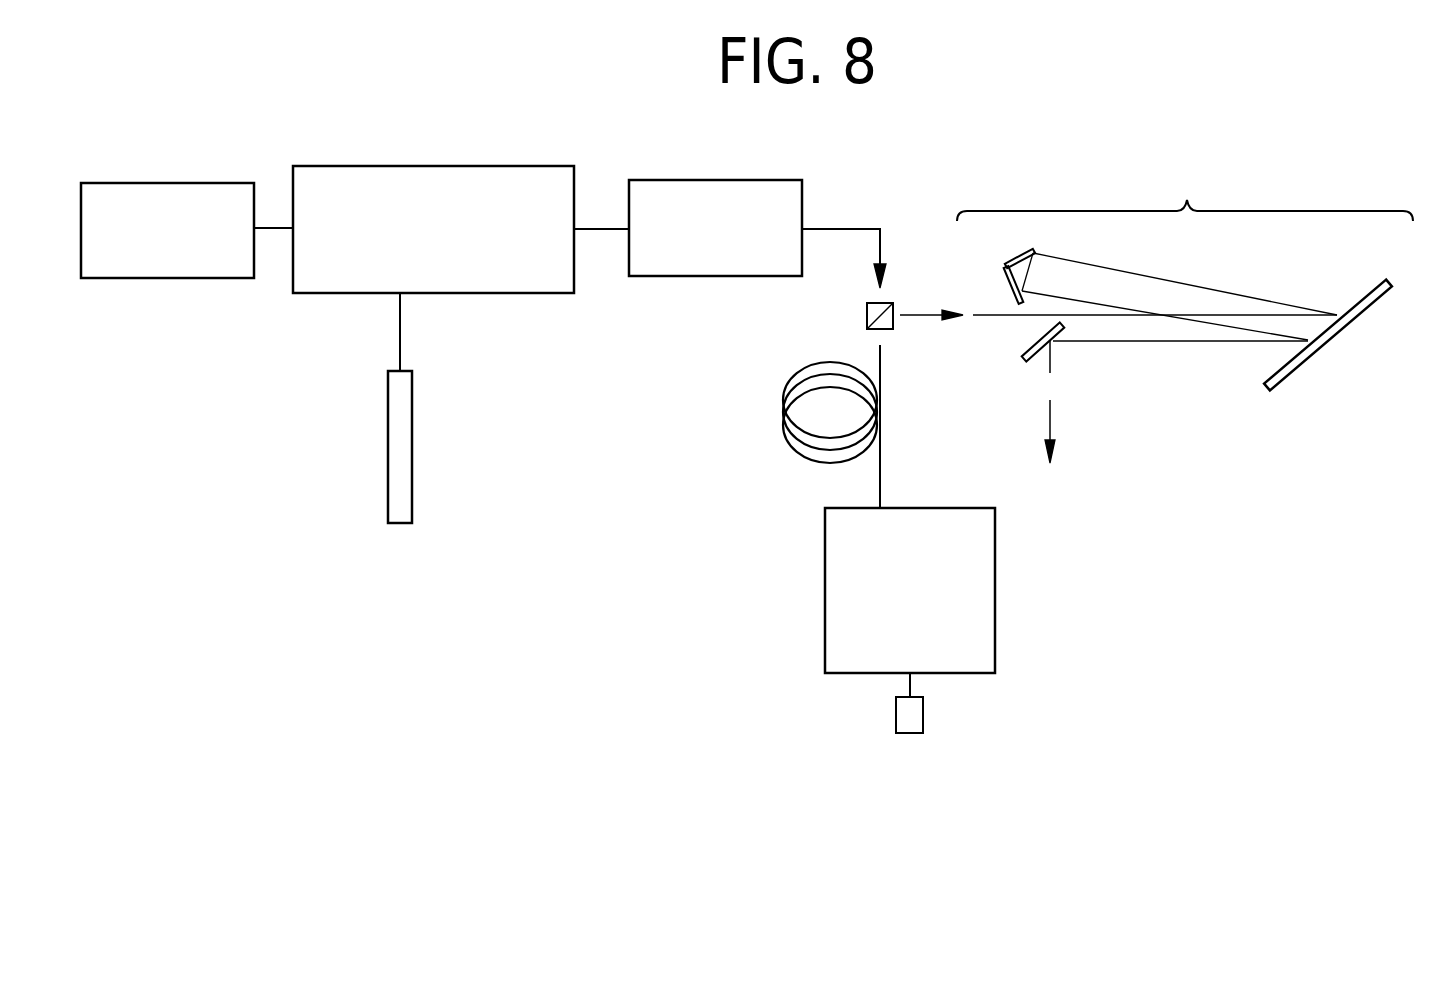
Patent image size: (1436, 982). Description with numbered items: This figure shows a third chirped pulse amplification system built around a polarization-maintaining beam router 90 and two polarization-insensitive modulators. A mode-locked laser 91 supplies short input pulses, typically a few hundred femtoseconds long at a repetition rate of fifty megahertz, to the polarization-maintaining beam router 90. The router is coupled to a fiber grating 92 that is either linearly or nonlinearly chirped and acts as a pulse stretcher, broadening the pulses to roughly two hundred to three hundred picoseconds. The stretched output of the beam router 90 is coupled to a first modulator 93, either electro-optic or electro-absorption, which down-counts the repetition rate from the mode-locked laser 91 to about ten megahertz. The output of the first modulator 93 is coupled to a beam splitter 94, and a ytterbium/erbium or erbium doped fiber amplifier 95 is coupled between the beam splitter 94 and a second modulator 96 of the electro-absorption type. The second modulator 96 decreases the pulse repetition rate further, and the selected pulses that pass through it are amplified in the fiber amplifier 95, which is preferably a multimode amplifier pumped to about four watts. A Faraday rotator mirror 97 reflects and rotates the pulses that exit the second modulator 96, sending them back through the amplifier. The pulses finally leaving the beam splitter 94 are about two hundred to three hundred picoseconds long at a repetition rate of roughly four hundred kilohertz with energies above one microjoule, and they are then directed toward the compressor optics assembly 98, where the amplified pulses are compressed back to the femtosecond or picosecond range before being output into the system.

The polarization-maintaining beam router 90 is at (483, 166).
The mode-locked laser 91 is at (222, 183).
The fiber grating 92 is at (412, 448).
The first modulator 93 is at (680, 180).
The beam splitter 94 is at (866, 317).
The ytterbium/erbium or erbium doped fiber amplifier 95 is at (880, 420).
The second modulator 96 is at (825, 564).
The Faraday rotator mirror 97 is at (896, 714).
The optical scanning assembly 98 is at (1187, 198).